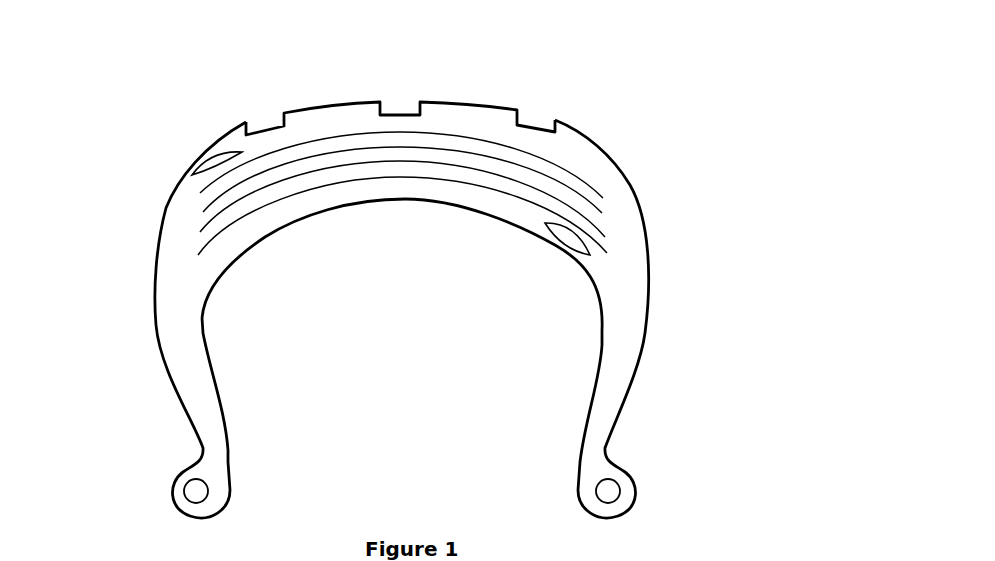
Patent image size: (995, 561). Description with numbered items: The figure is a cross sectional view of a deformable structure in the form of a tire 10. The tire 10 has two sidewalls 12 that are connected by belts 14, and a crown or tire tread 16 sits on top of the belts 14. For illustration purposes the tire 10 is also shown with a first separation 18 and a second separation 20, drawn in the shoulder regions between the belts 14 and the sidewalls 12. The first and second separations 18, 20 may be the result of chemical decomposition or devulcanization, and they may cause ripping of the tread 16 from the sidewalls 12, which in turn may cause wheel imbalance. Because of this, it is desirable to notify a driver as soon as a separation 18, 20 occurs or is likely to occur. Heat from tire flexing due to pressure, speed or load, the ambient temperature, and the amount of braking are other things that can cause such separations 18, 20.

The tire 10 is at (408, 272).
The sidewalls 12 is at (173, 323).
The belts 14 is at (592, 180).
The tire tread 16 is at (462, 104).
The first separation 18 is at (210, 158).
The second separation 20 is at (567, 243).